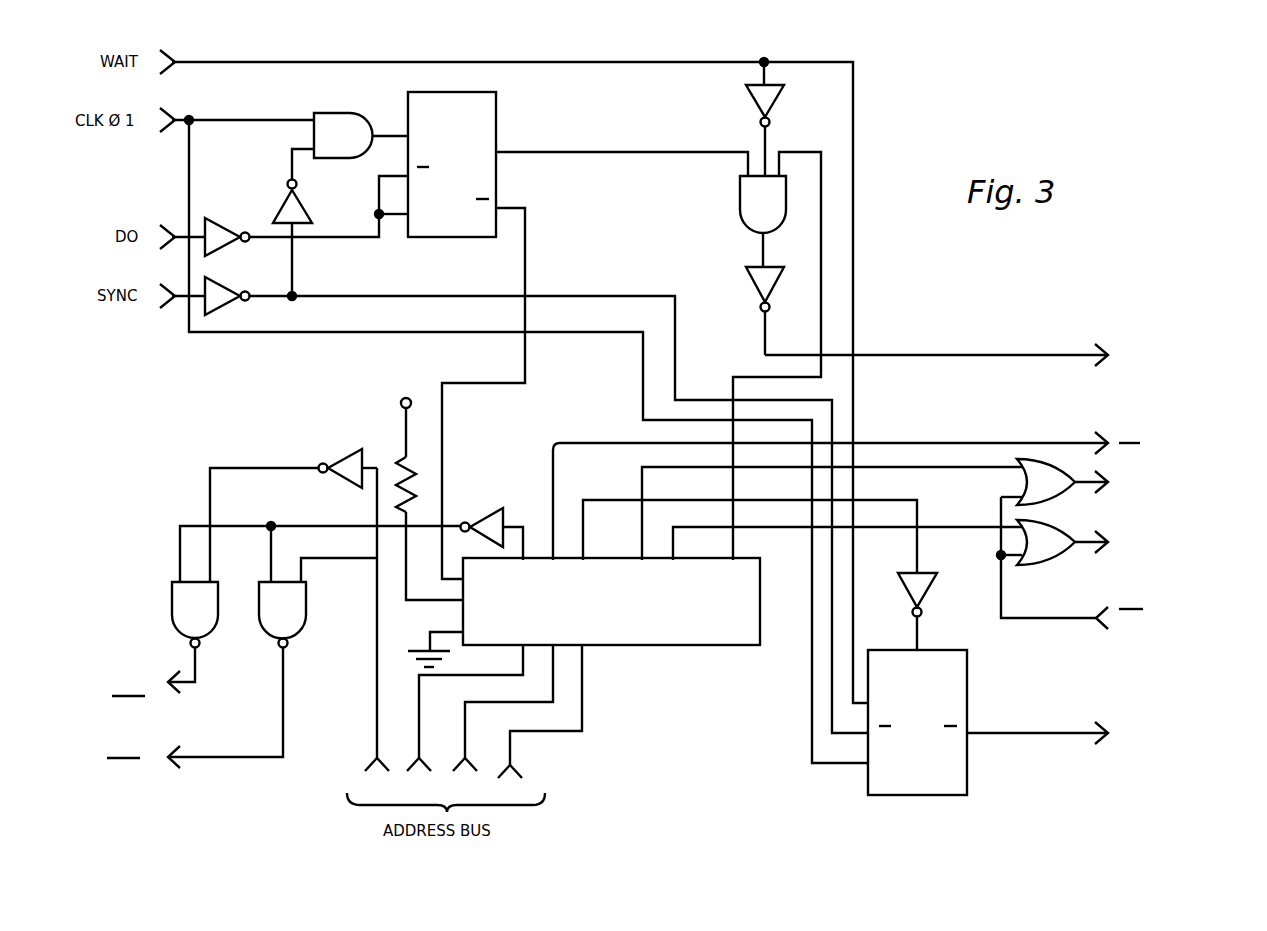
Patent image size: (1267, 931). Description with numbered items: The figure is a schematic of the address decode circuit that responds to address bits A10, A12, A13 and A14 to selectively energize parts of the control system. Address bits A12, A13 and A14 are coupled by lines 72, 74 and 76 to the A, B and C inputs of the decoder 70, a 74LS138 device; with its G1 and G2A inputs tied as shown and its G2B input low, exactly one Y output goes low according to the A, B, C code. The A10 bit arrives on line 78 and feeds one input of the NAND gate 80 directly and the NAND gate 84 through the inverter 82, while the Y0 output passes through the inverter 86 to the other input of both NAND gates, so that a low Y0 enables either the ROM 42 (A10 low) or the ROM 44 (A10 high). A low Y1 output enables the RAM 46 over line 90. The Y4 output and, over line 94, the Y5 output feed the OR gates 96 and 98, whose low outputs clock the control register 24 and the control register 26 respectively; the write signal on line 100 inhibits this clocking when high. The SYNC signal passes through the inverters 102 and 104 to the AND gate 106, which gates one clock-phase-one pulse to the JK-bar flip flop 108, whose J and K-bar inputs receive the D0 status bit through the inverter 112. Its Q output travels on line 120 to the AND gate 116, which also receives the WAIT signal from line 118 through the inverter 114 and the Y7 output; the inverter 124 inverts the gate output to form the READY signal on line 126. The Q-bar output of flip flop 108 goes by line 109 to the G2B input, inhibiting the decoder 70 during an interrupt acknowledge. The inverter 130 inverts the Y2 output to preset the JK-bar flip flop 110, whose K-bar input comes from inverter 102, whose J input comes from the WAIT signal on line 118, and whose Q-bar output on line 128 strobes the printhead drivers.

The control register 24 is at (1175, 487).
The control register 26 is at (1179, 545).
The ROM 42 is at (153, 680).
The ROM 44 is at (195, 712).
The RAM 46 is at (1150, 440).
The decoder 70 is at (668, 645).
The line 72 is at (440, 677).
The line 74 is at (483, 703).
The line 76 is at (530, 733).
The line 78 is at (377, 680).
The NAND gate 80 is at (295, 618).
The inverter 82 is at (345, 455).
The NAND gate 84 is at (178, 618).
The inverter 86 is at (478, 516).
The line 90 is at (962, 443).
The line 94 is at (955, 528).
The OR gate 96 is at (1048, 496).
The OR gate 98 is at (1040, 556).
The line 100 is at (1018, 620).
The inverter 102 is at (228, 290).
The inverter 104 is at (300, 210).
The AND gate 106 is at (330, 113).
The JK-bar flip flop 108 is at (497, 112).
The line 109 is at (445, 385).
The JK-bar flip flop 110 is at (950, 675).
The inverter 112 is at (228, 226).
The inverter 114 is at (772, 100).
The AND gate 116 is at (745, 212).
The line 118 is at (575, 62).
The line 120 is at (712, 152).
The inverter 124 is at (760, 288).
The line 126 is at (960, 355).
The line 128 is at (990, 733).
The inverter 130 is at (920, 590).